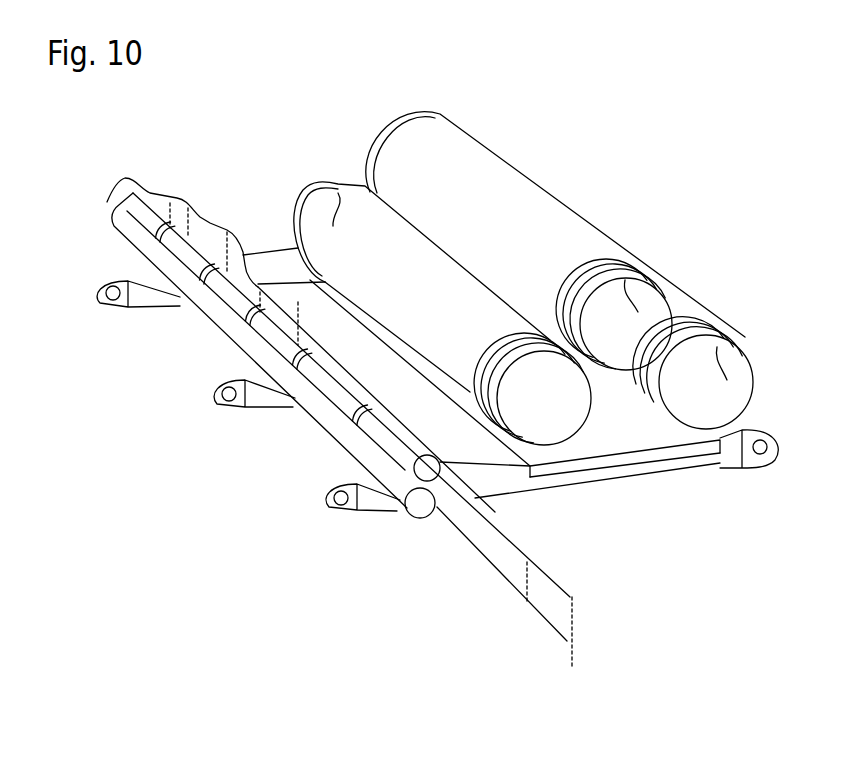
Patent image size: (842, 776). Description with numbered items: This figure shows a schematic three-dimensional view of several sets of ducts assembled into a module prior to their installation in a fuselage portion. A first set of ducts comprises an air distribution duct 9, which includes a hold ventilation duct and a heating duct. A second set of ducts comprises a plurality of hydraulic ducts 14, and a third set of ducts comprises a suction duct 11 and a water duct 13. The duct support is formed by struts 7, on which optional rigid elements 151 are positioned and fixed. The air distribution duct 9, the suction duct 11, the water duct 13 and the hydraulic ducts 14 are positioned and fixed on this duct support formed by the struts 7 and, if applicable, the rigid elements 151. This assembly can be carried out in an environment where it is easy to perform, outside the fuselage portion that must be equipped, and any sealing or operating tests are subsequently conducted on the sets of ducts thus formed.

The strut 7 is at (372, 498).
The air distribution duct 9 is at (313, 189).
The suction duct 11 is at (121, 178).
The water duct 13 is at (162, 198).
The hydraulic duct 14 is at (550, 605).
The rigid element 151 is at (625, 425).